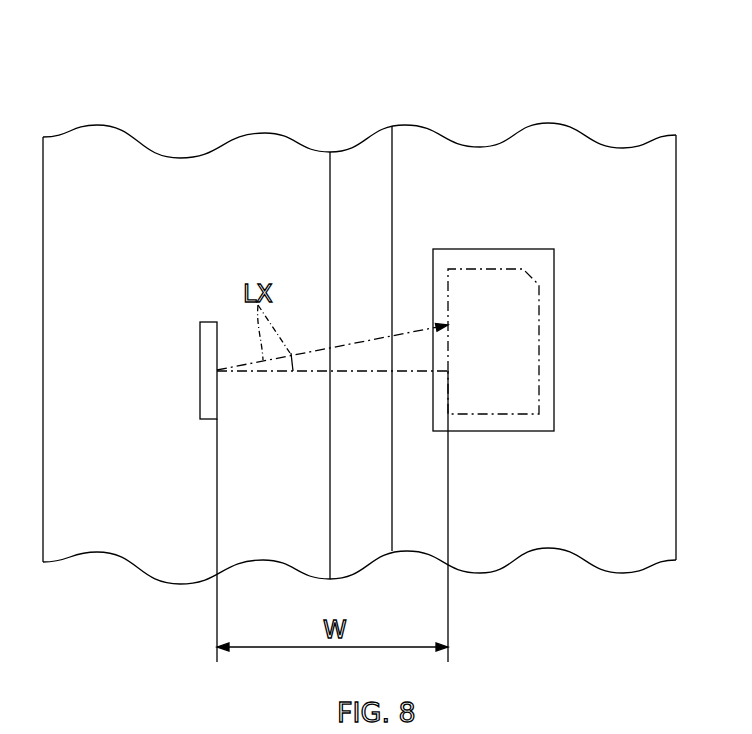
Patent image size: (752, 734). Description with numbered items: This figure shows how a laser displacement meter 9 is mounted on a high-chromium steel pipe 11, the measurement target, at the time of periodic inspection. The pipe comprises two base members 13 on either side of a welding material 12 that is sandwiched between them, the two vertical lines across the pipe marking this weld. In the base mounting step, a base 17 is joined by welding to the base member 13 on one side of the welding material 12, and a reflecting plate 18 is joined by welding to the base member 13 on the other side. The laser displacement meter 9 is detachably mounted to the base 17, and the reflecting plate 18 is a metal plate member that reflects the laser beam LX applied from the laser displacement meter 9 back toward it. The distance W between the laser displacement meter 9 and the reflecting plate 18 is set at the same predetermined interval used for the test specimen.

The laser displacement meter 9 is at (502, 269).
The high-chromium steel pipe 11 is at (449, 112).
The welding material 12 is at (350, 170).
The base member 13 is at (228, 143).
The base 17 is at (554, 300).
The reflecting plate 18 is at (200, 360).